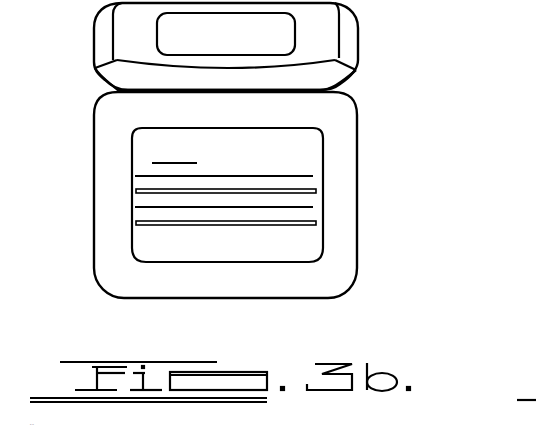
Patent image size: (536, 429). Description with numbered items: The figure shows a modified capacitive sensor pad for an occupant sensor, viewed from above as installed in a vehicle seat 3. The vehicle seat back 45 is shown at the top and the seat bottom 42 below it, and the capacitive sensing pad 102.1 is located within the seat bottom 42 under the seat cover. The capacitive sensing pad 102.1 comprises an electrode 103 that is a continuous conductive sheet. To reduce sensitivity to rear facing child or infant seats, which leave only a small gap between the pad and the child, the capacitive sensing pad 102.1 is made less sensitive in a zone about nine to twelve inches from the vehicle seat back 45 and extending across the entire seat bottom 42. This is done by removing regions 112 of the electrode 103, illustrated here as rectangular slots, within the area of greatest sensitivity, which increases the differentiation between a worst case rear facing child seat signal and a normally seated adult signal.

The seat 3 is at (358, 28).
The vehicle seat back 45 is at (357, 75).
The seat bottom 42 is at (357, 270).
The capacitive sensing pad 102.1 is at (306, 148).
The electrode 103 is at (174, 151).
The regions 112 is at (313, 176).